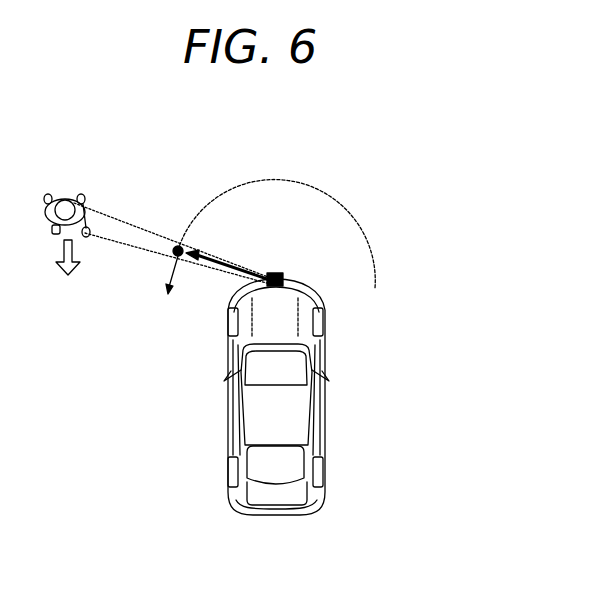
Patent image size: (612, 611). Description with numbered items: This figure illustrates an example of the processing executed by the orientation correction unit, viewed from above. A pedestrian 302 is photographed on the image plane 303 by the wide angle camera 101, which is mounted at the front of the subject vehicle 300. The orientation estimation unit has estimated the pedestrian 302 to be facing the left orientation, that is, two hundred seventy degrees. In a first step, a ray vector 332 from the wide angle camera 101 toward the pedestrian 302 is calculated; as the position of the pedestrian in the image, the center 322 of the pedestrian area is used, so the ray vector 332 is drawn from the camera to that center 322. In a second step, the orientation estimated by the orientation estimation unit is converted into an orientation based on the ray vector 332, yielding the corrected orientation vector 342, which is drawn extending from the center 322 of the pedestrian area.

The wide angle camera 101 is at (280, 272).
The subject vehicle 300 is at (323, 353).
The pedestrian 302 is at (70, 199).
The image plane 303 is at (376, 285).
The center of the pedestrian area 322 is at (176, 245).
The ray vector 332 is at (210, 258).
The corrected orientation vector 342 is at (171, 280).